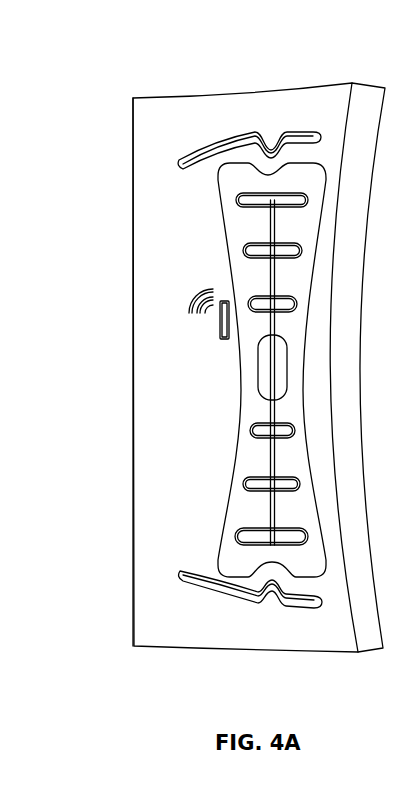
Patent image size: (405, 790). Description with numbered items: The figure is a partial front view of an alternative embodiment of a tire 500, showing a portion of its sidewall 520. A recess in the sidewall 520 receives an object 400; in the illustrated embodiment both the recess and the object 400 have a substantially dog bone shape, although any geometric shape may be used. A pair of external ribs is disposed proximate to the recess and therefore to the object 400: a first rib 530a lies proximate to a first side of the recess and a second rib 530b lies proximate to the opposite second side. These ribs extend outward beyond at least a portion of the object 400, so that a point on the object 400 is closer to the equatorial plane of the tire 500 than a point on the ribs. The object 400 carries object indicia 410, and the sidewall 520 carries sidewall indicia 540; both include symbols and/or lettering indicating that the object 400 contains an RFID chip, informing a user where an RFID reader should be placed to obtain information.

The tire 500 is at (96, 41).
The sidewall 520 is at (153, 608).
The sidewall indicia 540 is at (174, 372).
The first rib 530a is at (235, 142).
The second rib 530b is at (218, 595).
The object 400 is at (237, 553).
The object indicia 410 is at (245, 250).